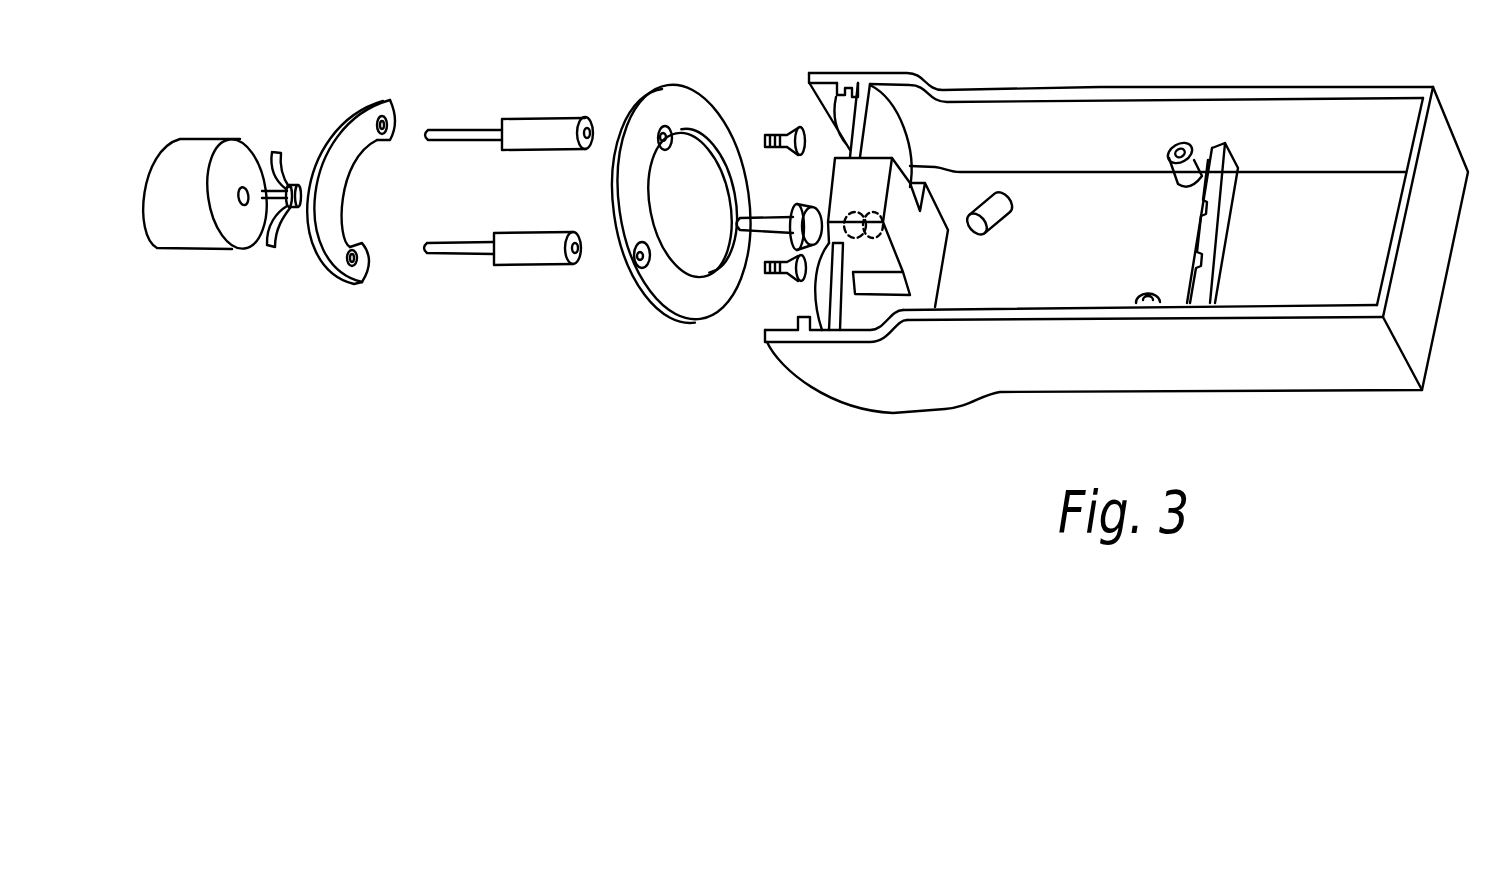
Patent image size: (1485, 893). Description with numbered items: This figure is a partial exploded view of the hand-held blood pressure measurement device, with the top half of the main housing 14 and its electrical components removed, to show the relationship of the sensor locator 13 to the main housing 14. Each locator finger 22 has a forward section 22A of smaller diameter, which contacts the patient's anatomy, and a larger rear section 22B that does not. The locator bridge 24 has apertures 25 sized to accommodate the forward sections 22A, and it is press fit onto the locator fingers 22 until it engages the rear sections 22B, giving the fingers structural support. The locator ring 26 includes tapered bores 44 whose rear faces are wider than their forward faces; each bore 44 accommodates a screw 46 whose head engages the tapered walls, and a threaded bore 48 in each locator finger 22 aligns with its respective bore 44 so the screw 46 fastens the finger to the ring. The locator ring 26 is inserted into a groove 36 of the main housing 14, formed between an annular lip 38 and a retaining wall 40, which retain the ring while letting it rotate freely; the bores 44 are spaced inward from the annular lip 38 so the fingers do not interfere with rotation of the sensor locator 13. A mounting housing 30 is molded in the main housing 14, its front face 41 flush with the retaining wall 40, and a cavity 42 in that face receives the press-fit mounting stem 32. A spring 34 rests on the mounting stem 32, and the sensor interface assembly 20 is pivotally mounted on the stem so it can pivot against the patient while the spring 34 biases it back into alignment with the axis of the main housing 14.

The sensor locator 13 is at (522, 211).
The main housing 14 is at (840, 72).
The sensor interface assembly 20 is at (205, 137).
The locator finger 22 is at (522, 184).
The forward section 22A is at (427, 128).
The rear section 22B is at (562, 122).
The locator bridge 24 is at (358, 122).
The aperture 25 is at (389, 123).
The locator ring 26 is at (712, 92).
The mounting housing 30 is at (883, 203).
The mounting stem 32 is at (767, 220).
The spring 34 is at (282, 178).
The groove 36 is at (855, 90).
The annular lip 38 is at (800, 323).
The retaining wall 40 is at (802, 287).
The front face 41 is at (843, 245).
The cavity 42 is at (867, 238).
The bore 44 is at (663, 137).
The screw 46 is at (802, 127).
The threaded bore 48 is at (589, 190).